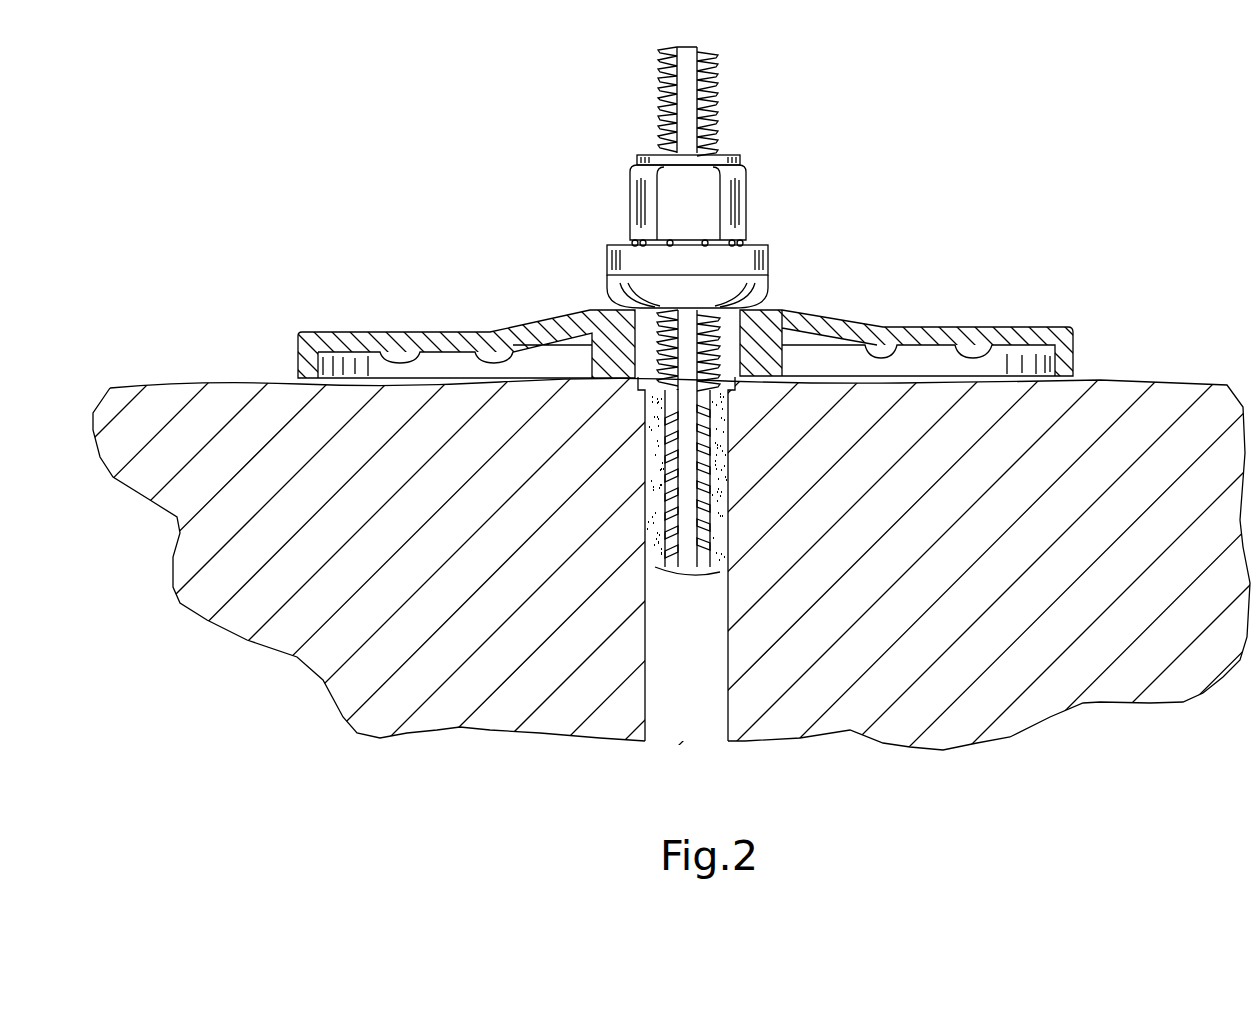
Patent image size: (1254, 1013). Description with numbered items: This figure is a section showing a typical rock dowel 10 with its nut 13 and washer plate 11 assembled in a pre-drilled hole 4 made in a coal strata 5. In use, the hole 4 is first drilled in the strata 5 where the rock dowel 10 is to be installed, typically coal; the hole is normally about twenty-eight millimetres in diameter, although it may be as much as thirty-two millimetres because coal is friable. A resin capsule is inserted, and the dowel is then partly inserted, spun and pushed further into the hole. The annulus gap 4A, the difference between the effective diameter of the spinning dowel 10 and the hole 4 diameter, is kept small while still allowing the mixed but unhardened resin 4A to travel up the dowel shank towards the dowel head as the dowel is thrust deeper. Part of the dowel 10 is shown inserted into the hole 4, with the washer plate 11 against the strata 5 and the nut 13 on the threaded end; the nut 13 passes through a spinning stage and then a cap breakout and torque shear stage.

The strata 5 is at (186, 368).
The hole 4 is at (728, 650).
The annulus gap 4A is at (653, 460).
The rock dowel 10 is at (707, 468).
The nut 13 is at (770, 260).
The washer plate 11 is at (987, 325).